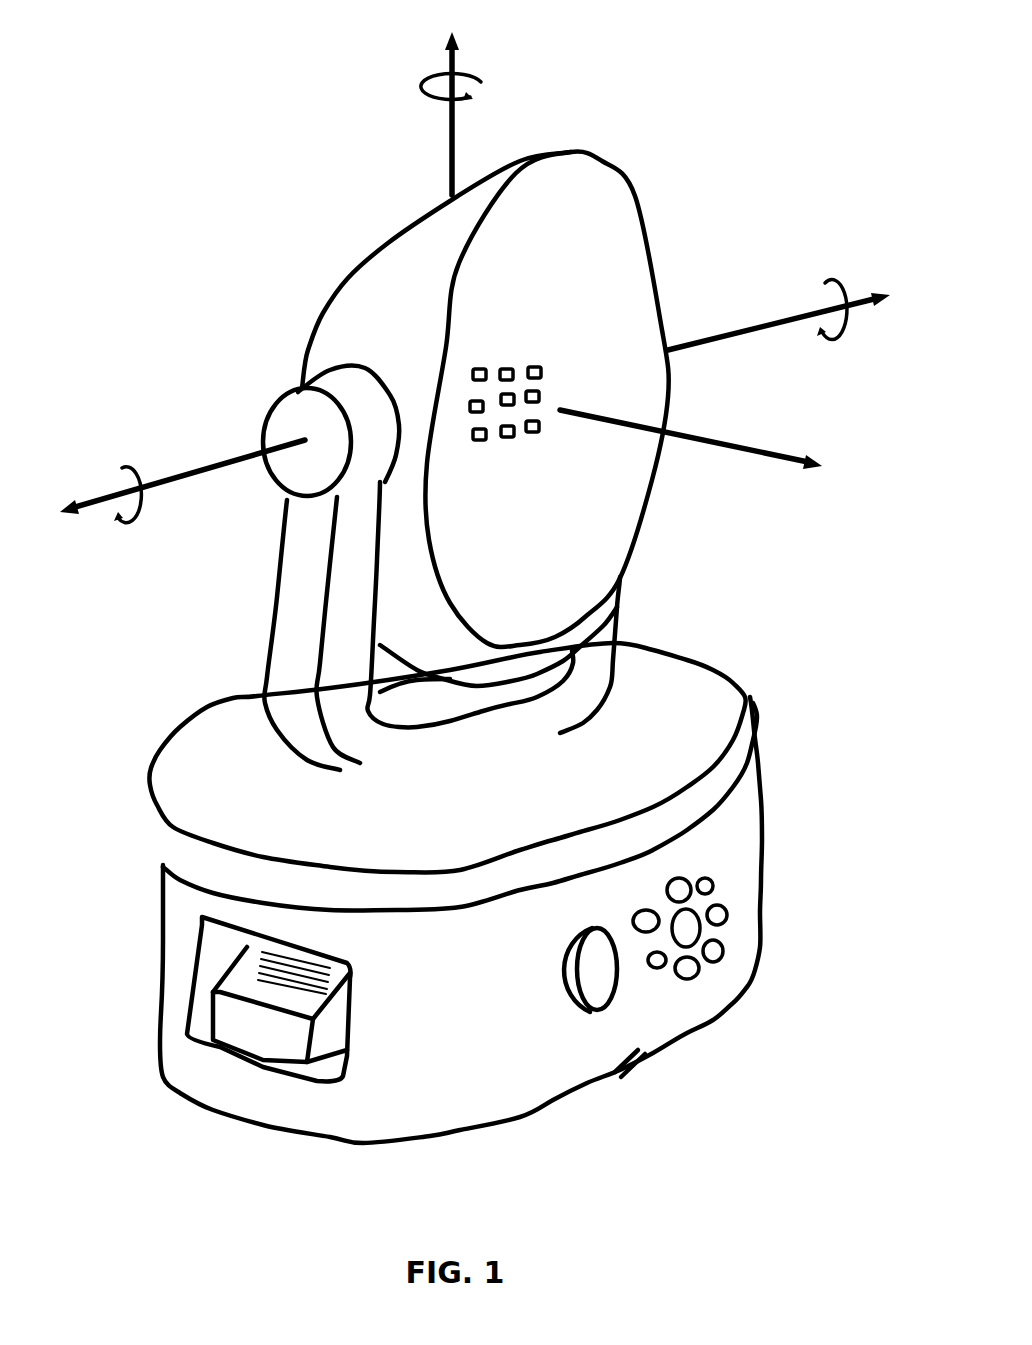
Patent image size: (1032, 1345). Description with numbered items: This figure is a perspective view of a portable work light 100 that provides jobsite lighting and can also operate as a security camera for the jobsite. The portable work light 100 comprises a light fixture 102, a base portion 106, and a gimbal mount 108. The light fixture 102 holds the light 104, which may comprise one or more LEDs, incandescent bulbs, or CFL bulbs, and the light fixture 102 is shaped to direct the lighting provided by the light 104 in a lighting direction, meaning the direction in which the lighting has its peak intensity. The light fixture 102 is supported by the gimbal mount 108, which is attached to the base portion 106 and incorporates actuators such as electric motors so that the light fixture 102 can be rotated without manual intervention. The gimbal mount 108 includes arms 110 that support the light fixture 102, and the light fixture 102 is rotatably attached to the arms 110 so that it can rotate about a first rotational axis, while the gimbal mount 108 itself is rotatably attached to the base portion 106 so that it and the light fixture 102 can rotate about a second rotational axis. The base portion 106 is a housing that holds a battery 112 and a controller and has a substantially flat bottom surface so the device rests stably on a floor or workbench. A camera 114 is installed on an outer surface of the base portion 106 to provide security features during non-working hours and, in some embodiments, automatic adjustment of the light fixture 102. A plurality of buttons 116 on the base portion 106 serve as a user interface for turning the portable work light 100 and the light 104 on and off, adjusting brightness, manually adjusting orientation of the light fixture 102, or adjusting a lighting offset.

The portable work light 100 is at (118, 162).
The light fixture 102 is at (345, 312).
The light 104 is at (555, 362).
The base portion 106 is at (518, 1092).
The gimbal mount 108 is at (203, 737).
The arms 110 is at (298, 610).
The battery 112 is at (228, 1011).
The camera 114 is at (606, 995).
The plurality of buttons 116 is at (712, 968).